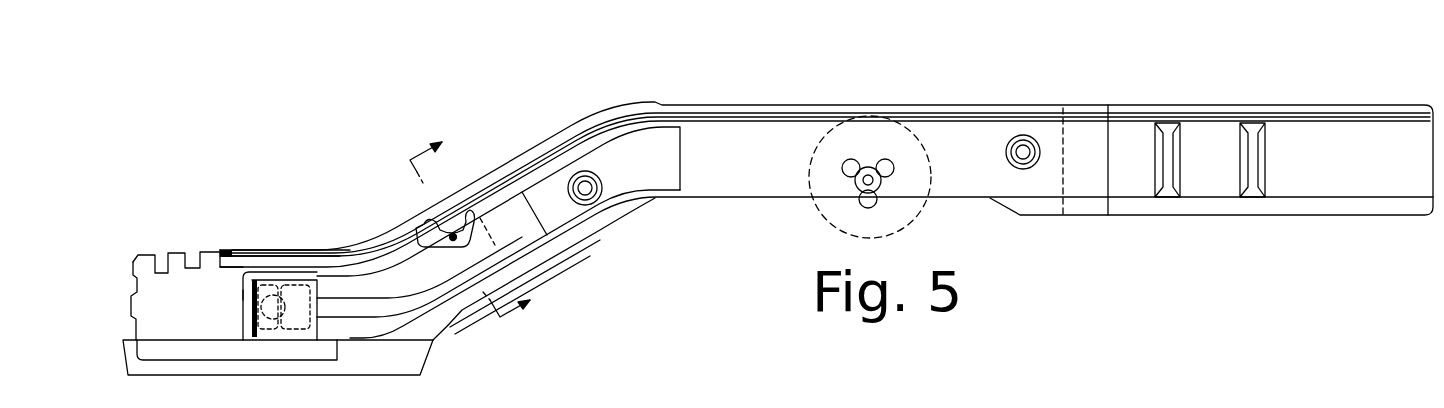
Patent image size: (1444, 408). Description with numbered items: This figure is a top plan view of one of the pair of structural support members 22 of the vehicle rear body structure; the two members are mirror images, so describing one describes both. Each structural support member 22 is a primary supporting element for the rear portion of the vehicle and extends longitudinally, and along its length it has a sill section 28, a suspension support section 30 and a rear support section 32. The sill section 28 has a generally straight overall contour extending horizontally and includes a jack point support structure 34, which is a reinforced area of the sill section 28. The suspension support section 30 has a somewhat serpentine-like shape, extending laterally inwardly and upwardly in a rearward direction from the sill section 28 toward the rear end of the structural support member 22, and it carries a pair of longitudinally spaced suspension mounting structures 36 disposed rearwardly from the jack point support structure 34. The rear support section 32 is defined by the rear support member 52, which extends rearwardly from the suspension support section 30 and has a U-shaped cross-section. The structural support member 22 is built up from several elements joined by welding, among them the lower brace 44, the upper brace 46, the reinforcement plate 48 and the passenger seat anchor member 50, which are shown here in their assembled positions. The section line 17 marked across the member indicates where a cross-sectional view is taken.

The section line 17- 17 is at (488, 219).
The structural support member 22 is at (685, 100).
The sill section 28 is at (376, 246).
The suspension support section 30 is at (765, 115).
The rear support section 32 is at (1205, 120).
The jack point support structure 34 is at (243, 290).
The suspension mounting structures 36 is at (602, 188).
The lower brace 44 is at (500, 250).
The upper brace 46 is at (290, 283).
The reinforcement plate 48 is at (407, 313).
The passenger seat anchor member 50 is at (437, 232).
The rear support member 52 is at (1358, 148).